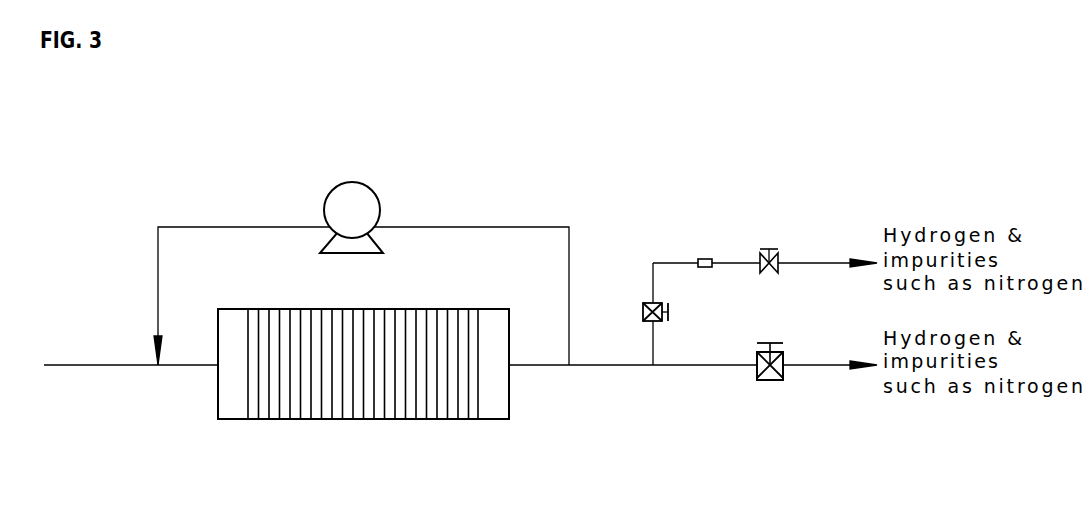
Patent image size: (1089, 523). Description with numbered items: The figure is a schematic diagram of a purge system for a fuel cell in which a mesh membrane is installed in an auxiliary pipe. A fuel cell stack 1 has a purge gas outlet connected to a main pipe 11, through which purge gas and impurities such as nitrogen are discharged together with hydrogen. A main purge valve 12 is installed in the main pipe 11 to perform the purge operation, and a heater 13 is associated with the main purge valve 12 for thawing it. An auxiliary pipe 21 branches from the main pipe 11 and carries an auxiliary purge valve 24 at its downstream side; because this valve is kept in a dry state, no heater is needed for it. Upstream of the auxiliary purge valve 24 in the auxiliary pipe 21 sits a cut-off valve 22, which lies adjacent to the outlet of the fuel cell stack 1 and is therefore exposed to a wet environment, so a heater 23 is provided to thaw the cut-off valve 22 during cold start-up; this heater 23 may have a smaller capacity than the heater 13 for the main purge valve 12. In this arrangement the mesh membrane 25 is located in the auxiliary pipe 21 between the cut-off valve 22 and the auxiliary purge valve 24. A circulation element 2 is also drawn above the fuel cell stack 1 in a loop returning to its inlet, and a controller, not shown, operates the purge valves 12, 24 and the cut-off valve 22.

The fuel cell stack 1 is at (368, 407).
The circulation pump 2 is at (394, 196).
The main pipe 11 is at (765, 418).
The main purge valve 12 is at (817, 344).
The heater 13 is at (787, 432).
The auxiliary pipe 21 is at (765, 215).
The cut-off valve 22 is at (639, 260).
The heater 23 is at (619, 298).
The auxiliary purge valve 24 is at (808, 224).
The mesh membrane 25 is at (683, 224).